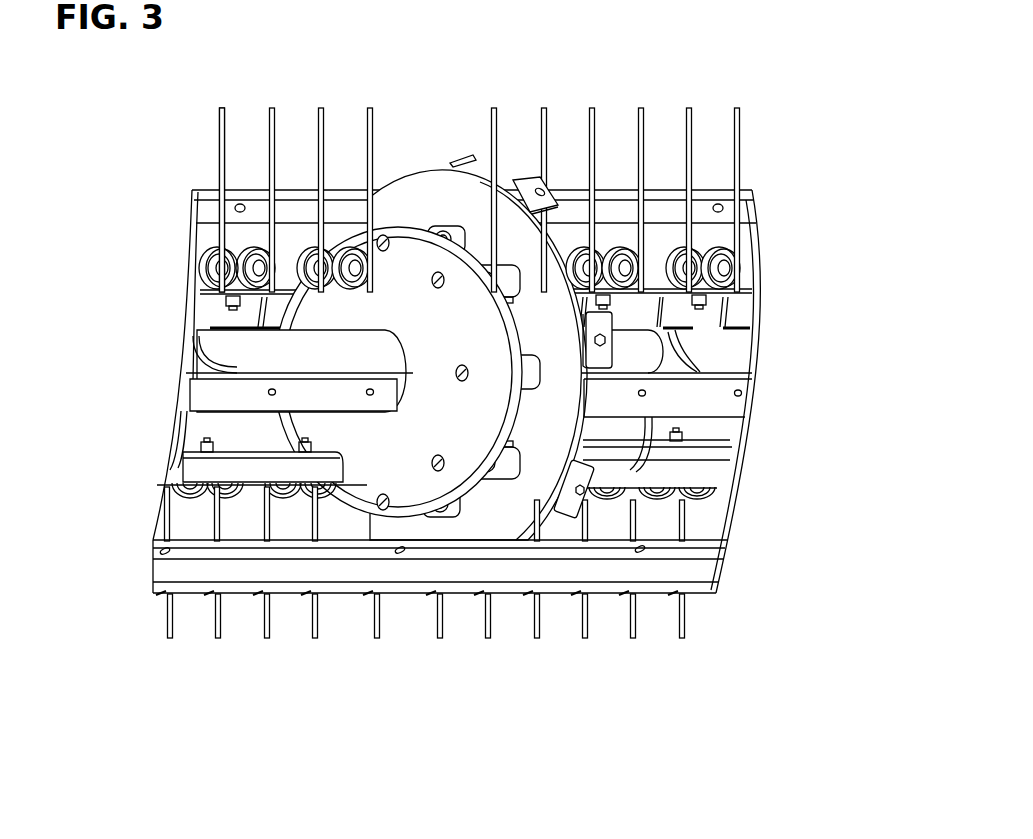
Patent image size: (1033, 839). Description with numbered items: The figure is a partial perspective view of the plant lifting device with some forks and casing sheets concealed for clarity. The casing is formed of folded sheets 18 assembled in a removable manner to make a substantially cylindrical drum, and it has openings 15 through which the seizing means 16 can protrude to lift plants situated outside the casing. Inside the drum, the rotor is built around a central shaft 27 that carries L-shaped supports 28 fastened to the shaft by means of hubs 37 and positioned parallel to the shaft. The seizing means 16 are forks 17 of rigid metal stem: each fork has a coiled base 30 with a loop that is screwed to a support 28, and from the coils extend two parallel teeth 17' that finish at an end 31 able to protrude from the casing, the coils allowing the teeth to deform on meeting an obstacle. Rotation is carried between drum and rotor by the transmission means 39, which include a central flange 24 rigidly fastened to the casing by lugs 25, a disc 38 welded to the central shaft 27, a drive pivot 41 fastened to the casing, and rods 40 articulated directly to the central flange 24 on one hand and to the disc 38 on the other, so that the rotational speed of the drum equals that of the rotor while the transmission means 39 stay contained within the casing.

The openings 15 is at (327, 593).
The seizing means 16 is at (208, 152).
The fork 17 is at (156, 200).
The tooth 17' is at (321, 166).
The sheet 18 is at (248, 575).
The central flange 24 is at (532, 334).
The lugs 25 is at (528, 182).
The central shaft 27 is at (647, 356).
The supports 28 is at (747, 278).
The base 30 is at (240, 283).
The end 31 is at (739, 107).
The hubs 37 is at (657, 327).
The disc 38 is at (408, 464).
The transmission means 39 is at (510, 526).
The rod 40 is at (486, 275).
The drive pivot 41 is at (512, 373).